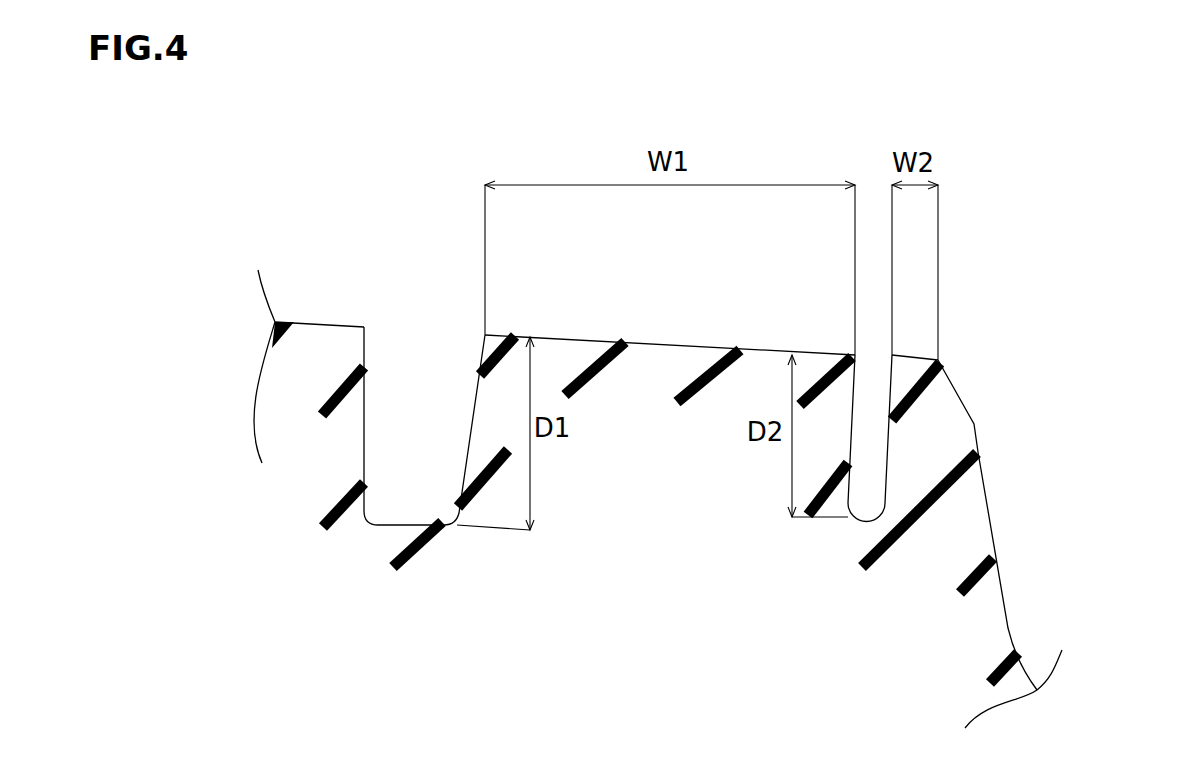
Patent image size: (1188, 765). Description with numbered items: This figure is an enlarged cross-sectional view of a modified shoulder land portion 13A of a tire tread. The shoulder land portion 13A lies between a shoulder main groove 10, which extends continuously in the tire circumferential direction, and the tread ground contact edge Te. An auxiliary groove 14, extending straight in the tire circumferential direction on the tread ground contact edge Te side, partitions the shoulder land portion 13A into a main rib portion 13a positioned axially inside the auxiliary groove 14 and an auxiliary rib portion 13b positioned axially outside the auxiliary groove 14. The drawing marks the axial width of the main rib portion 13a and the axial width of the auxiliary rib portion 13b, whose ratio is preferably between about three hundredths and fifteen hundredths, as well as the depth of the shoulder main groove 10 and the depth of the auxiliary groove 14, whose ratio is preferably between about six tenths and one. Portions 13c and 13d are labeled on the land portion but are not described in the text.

The shoulder main groove 10 is at (410, 397).
The shoulder land portion 13A is at (1178, 162).
The main rib portion 13a is at (662, 387).
The auxiliary rib portion 13b is at (938, 452).
The groove-side edge portion of land portion 13c is at (580, 338).
The tread-edge-side edge portion of land portion 13d is at (915, 360).
The auxiliary groove 14 is at (870, 468).
The tread ground contact edge Te is at (938, 360).